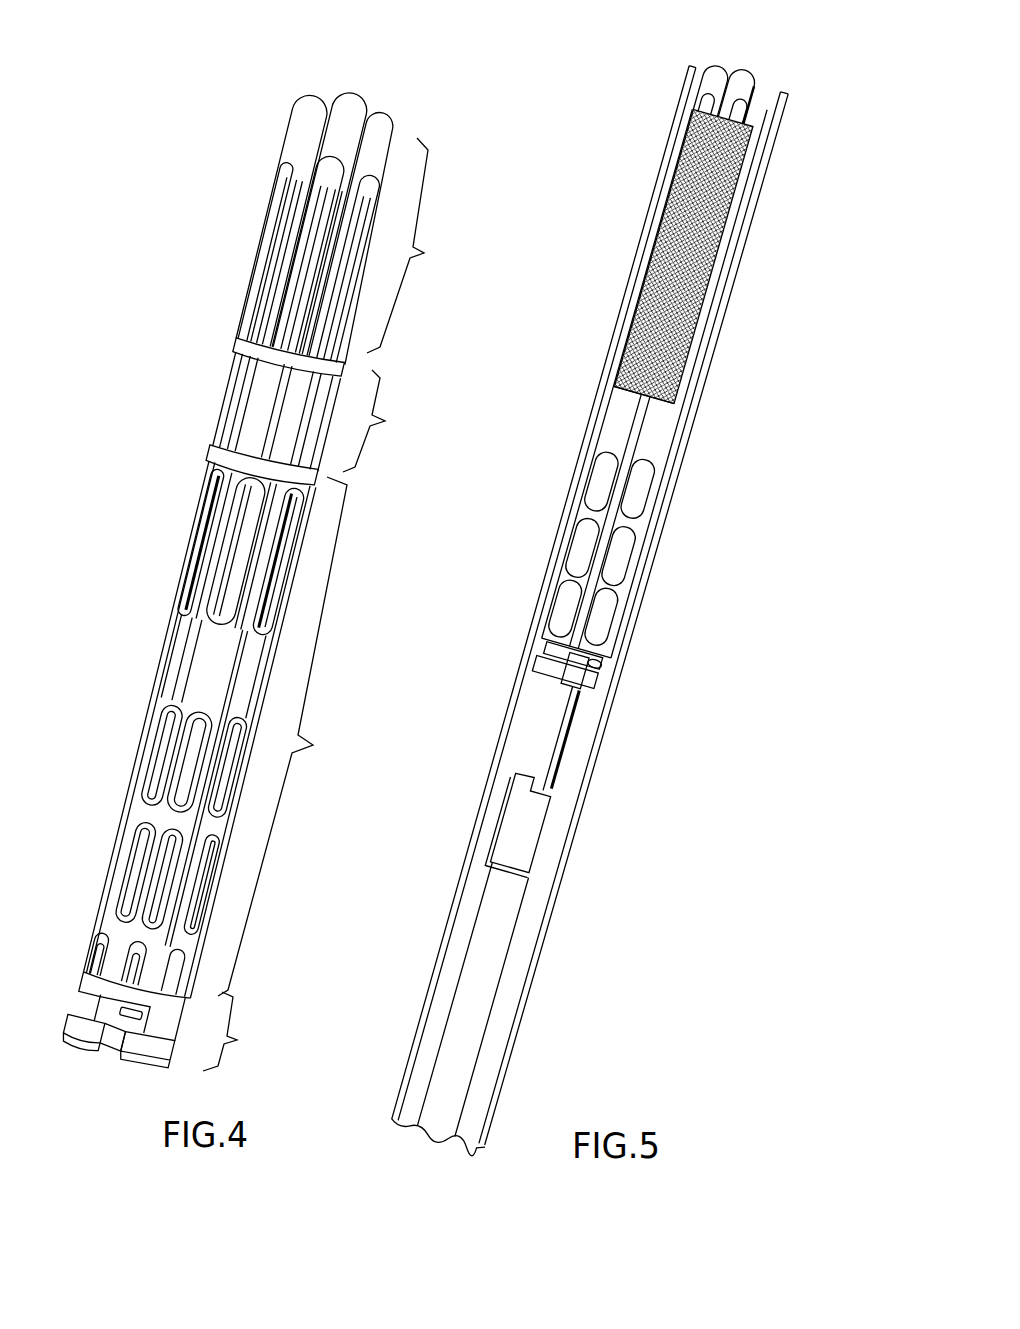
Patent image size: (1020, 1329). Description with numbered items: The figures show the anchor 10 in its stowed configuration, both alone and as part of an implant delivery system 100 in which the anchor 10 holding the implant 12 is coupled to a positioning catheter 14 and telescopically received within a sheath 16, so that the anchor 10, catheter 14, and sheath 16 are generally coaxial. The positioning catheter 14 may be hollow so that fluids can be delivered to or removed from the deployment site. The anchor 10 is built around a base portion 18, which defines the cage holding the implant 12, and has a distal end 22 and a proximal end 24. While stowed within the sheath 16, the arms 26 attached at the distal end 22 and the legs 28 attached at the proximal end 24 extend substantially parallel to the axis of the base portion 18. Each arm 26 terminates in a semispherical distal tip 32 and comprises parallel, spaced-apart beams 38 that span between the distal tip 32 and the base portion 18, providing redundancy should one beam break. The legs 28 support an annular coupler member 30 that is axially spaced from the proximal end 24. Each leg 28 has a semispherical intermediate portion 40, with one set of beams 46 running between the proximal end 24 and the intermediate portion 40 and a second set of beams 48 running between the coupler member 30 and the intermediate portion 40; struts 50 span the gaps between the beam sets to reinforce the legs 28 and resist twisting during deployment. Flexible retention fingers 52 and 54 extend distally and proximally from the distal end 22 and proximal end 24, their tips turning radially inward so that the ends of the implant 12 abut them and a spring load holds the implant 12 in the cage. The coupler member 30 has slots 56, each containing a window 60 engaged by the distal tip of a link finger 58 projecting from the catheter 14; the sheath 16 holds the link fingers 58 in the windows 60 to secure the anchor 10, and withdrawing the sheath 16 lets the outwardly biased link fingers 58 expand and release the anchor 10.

In FIG. 4, the anchor 10 is at (150, 172).
In FIG. 5, the anchor 10 is at (618, 274).
In FIG. 5, the implant 12 is at (680, 192).
In FIG. 5, the positioning catheter 14 is at (530, 836).
In FIG. 5, the sheath 16 is at (470, 882).
In FIG. 4, the base portion 18 is at (312, 412).
In FIG. 4, the distal end 22 is at (258, 350).
In FIG. 4, the proximal end 24 is at (216, 480).
In FIG. 4, the arms 26 is at (413, 245).
In FIG. 4, the legs 28 is at (282, 736).
In FIG. 4, the coupler member 30 is at (169, 1021).
In FIG. 5, the coupler member 30 is at (545, 650).
In FIG. 4, the distal tip 32 is at (385, 140).
In FIG. 5, the distal tip 32 is at (748, 82).
In FIG. 4, the beams 38 is at (283, 302).
In FIG. 4, the intermediate portion 40 is at (165, 682).
In FIG. 4, the beams 46 is at (185, 602).
In FIG. 4, the beams 48 is at (180, 866).
In FIG. 5, the beams 48 is at (625, 577).
In FIG. 4, the struts 50 is at (140, 805).
In FIG. 5, the struts 50 is at (612, 592).
In FIG. 4, the retention fingers 52 is at (290, 196).
In FIG. 4, the retention fingers 54 is at (205, 525).
In FIG. 4, the slots 56 is at (120, 1042).
In FIG. 5, the link fingers 58 is at (560, 735).
In FIG. 4, the window 60 is at (120, 1021).
In FIG. 5, the implant delivery system 100 is at (672, 748).